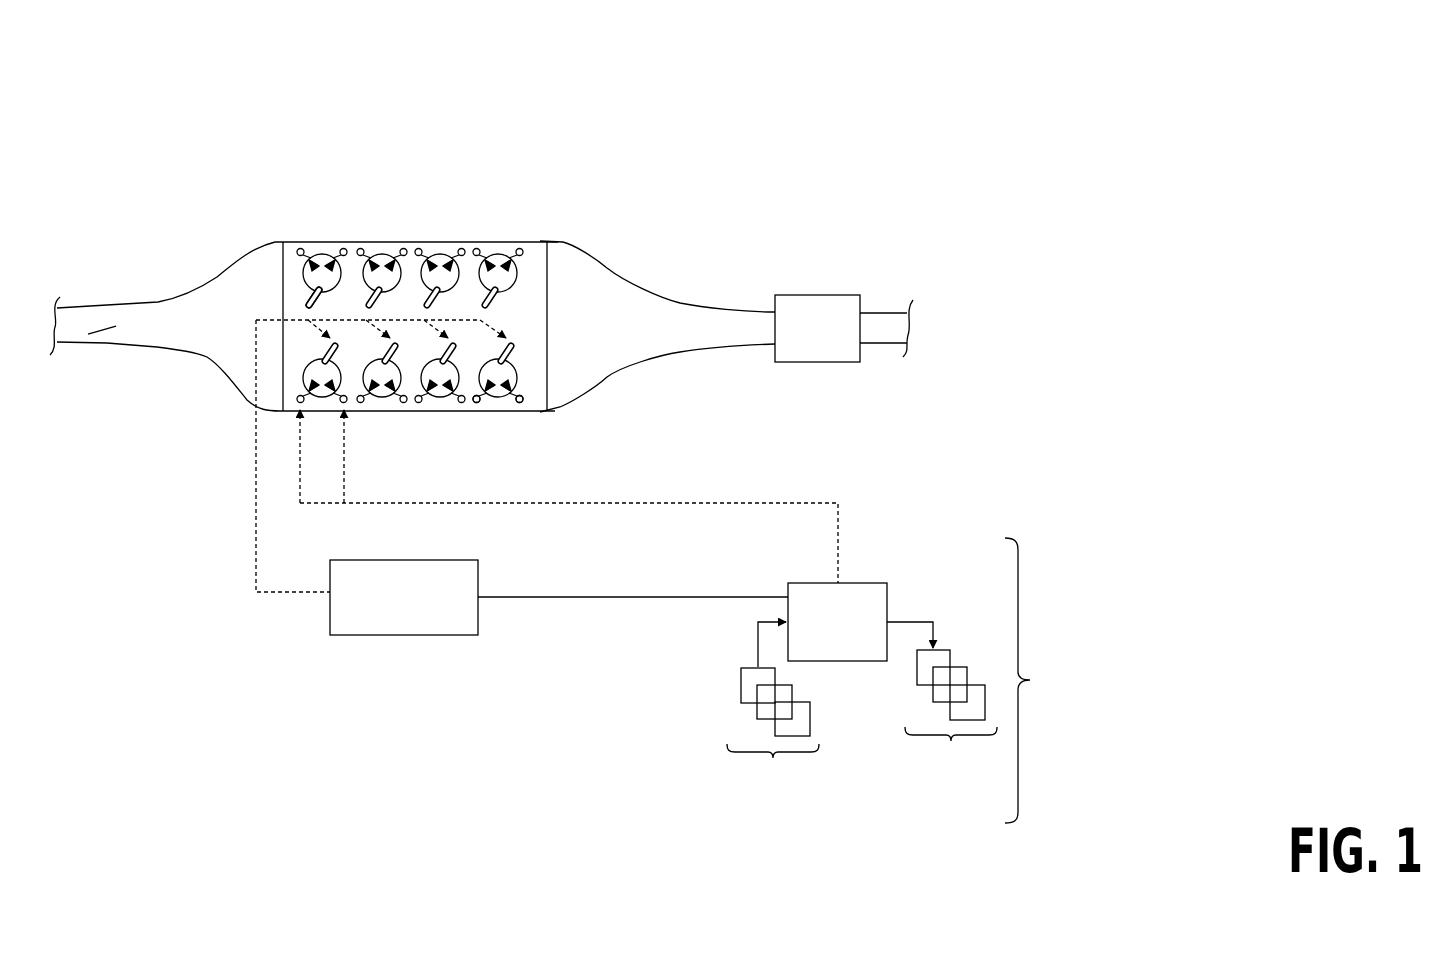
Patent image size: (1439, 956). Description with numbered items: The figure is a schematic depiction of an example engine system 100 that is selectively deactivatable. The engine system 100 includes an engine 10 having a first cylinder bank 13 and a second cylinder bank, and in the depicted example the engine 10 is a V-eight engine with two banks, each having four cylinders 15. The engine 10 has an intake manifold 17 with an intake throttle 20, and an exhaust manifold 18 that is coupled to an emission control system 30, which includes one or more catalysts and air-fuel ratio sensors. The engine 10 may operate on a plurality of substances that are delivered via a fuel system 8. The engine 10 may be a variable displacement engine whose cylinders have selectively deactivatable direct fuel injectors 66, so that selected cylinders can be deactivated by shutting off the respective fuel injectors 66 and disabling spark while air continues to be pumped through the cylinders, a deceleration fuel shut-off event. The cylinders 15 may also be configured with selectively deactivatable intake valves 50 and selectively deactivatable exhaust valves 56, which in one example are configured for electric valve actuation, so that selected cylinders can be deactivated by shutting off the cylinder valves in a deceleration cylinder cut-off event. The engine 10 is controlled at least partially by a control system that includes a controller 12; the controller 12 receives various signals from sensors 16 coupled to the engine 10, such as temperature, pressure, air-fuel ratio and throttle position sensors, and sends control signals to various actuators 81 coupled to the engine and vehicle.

The engine system 100 is at (1057, 125).
The engine 10 is at (485, 216).
The first cylinder bank 13 is at (412, 238).
The cylinders 15 is at (520, 268).
The intake manifold 17 is at (157, 300).
The exhaust manifold 18 is at (612, 297).
The intake throttle 20 is at (108, 330).
The emission control system 30 is at (817, 295).
The fuel injectors 66 is at (306, 304).
The intake valves 50 is at (478, 412).
The exhaust valves 56 is at (515, 406).
The fuel system 8 is at (559, 597).
The controller 12 is at (837, 622).
The sensors 16 is at (773, 714).
The actuators 81 is at (942, 704).